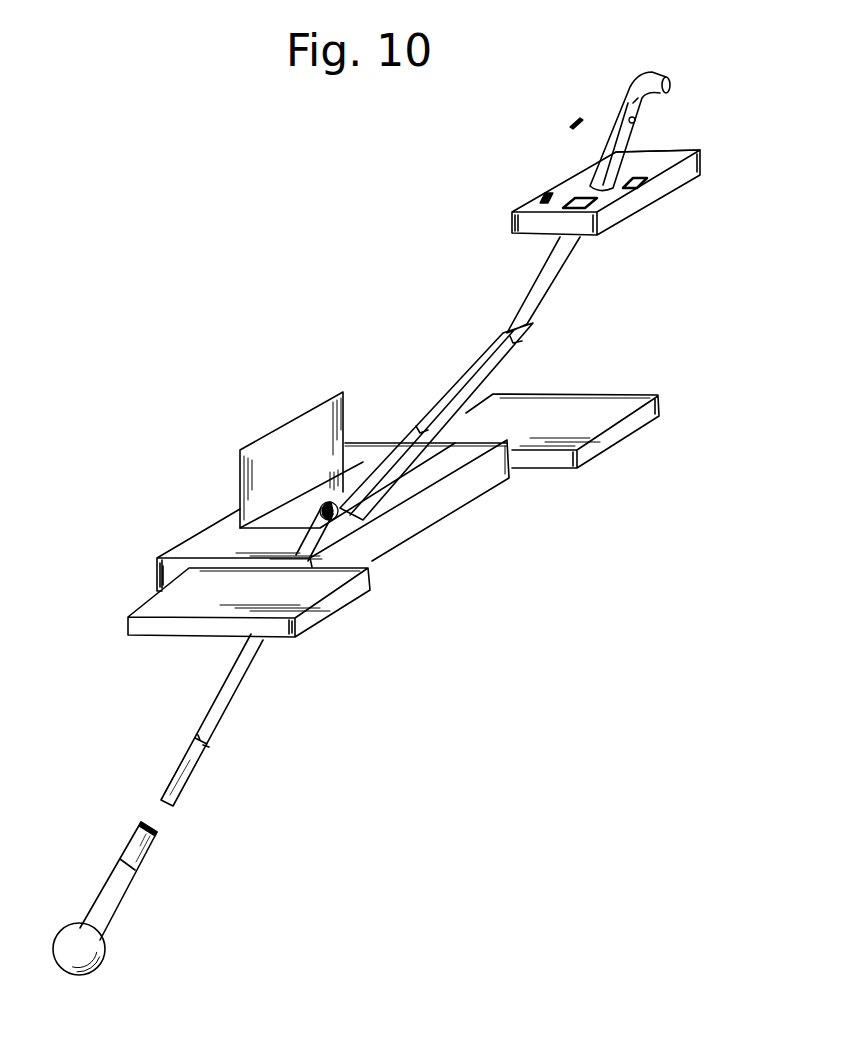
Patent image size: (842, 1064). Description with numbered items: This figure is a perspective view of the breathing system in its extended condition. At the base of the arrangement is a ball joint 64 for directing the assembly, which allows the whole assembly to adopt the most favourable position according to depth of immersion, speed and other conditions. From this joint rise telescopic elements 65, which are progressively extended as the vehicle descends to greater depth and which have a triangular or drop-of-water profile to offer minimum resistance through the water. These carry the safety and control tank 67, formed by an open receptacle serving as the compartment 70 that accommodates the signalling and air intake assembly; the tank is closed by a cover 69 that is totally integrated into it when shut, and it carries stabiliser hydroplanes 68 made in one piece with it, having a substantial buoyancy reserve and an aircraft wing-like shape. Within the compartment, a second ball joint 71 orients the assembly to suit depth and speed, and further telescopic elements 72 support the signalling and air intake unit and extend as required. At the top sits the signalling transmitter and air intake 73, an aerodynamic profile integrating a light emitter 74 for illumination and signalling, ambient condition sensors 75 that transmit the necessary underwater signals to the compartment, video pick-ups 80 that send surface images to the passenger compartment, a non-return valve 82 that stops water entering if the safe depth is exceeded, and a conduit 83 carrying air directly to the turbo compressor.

The ball joint for directing the assembly 64 is at (100, 955).
The telescopic elements 65 is at (110, 878).
The safety and control tank 67 is at (467, 482).
The stabiliser hydroplanes 68 is at (333, 603).
The cover 69 is at (283, 440).
The compartment 70 is at (283, 520).
The ball joint for orientation of the assembly 71 is at (340, 512).
The telescopic elements 72 is at (510, 408).
The signalling transmitter and air intake 73 is at (673, 153).
The light emitter 74 is at (641, 185).
The ambient condition sensors 75 is at (598, 208).
The video pick-ups 80 is at (563, 185).
The non-return valve 82 is at (637, 120).
The conduit 83 is at (615, 138).